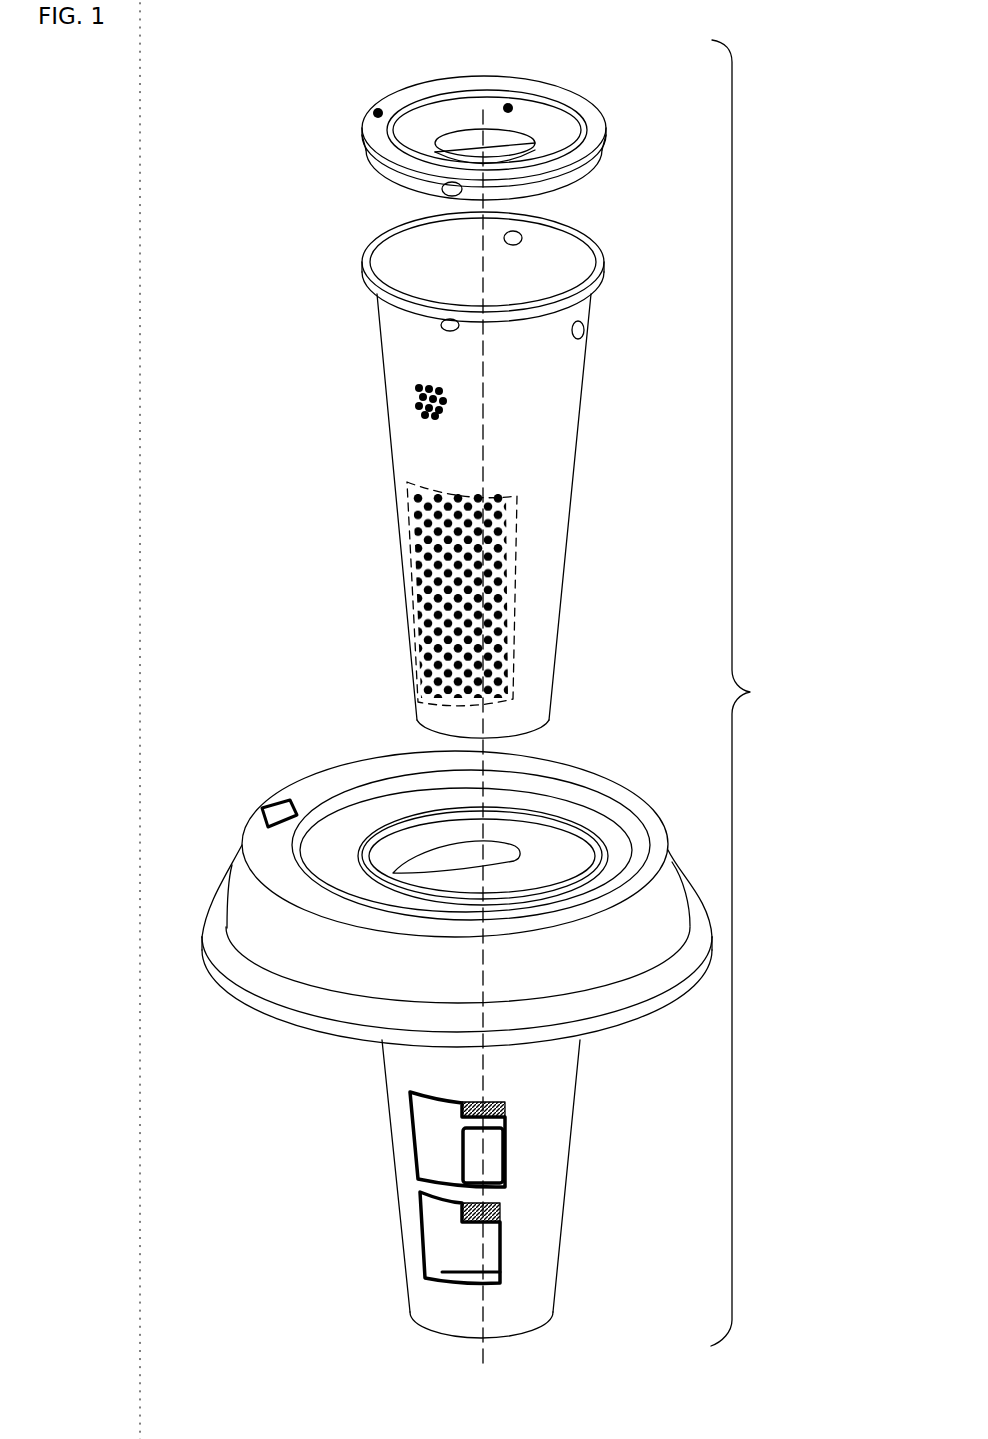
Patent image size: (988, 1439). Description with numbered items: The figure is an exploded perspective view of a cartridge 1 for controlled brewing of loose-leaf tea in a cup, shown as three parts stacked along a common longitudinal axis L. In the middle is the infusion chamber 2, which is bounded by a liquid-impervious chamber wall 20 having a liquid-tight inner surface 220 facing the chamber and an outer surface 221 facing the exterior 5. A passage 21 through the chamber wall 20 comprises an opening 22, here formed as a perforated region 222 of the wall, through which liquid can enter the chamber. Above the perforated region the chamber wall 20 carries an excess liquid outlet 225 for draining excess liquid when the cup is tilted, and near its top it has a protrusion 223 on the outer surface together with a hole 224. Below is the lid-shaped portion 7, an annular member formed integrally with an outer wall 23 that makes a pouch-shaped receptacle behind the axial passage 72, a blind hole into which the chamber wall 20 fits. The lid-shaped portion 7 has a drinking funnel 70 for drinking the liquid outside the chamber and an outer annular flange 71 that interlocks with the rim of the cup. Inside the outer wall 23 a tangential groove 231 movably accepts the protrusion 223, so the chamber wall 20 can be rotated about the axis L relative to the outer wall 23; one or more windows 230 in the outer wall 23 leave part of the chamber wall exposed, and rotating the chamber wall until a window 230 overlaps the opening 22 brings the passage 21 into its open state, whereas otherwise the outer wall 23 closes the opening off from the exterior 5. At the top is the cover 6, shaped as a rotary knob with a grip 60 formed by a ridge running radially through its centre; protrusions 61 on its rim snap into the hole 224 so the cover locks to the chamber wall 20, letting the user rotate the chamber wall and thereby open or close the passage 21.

The cartridge 1 is at (743, 693).
The infusion chamber 2 is at (505, 703).
The chamber wall 20 is at (390, 376).
The passage 21 is at (472, 852).
The opening 22 is at (420, 588).
The outer wall 23 is at (474, 1189).
The inner surface 220 is at (407, 265).
The outer surface 221 is at (410, 404).
The perforated region 222 is at (516, 585).
The protrusion 223 is at (585, 330).
The hole 224 is at (512, 230).
The excess liquid outlet 225 is at (417, 470).
The window 230 is at (492, 1162).
The groove 231 is at (396, 872).
The exterior 5 is at (382, 1258).
The cover 6 is at (456, 139).
The grip 60 is at (468, 148).
The protrusion 61 is at (440, 191).
The lid-shaped portion 7 is at (426, 884).
The drinking funnel 70 is at (280, 800).
The outer annular flange 71 is at (232, 978).
The axial passage 72 is at (550, 856).
The longitudinal axis L is at (485, 385).